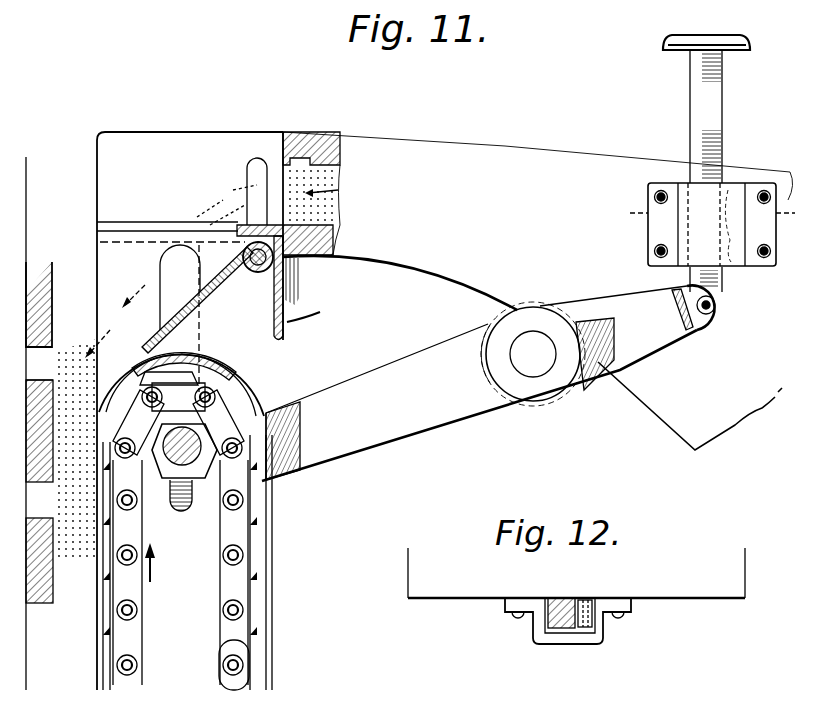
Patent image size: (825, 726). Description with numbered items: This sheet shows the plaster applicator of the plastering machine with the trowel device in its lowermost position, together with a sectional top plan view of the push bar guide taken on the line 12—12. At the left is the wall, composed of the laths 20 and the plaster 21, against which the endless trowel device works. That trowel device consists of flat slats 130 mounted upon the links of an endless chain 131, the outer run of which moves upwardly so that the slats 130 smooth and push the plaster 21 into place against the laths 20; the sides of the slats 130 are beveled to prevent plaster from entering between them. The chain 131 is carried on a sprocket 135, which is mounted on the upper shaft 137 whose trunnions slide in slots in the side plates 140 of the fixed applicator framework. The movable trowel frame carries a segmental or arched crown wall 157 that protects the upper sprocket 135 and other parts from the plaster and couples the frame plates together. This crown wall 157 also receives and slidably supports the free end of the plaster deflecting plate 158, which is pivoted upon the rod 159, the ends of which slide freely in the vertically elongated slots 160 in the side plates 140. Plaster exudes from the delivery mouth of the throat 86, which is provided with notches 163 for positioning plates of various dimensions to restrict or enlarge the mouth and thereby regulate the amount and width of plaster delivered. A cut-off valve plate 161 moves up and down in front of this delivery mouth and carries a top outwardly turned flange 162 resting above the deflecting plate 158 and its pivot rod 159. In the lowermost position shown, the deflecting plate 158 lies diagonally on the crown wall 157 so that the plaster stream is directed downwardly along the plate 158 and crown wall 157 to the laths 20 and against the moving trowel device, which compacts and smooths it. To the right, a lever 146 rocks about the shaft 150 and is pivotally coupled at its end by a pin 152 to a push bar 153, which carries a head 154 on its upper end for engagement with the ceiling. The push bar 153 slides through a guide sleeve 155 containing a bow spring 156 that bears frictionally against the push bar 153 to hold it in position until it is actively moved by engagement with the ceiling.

In FIG. 11, the side plates 140 is at (133, 140).
In FIG. 11, the vertically elongated slots 160 is at (257, 165).
In FIG. 11, the notches 163 is at (303, 150).
In FIG. 11, the throat 86 is at (420, 150).
In FIG. 12, the throat 86 is at (418, 601).
In FIG. 11, the head 154 is at (668, 52).
In FIG. 11, the push bar 153 is at (690, 102).
In FIG. 12, the push bar 153 is at (548, 630).
In FIG. 11, the section line 12— 12 is at (713, 215).
In FIG. 11, the guide sleeve 155 is at (680, 228).
In FIG. 12, the guide sleeve 155 is at (600, 645).
In FIG. 11, the top outwardly turned flange 162 is at (238, 225).
In FIG. 11, the rod 159 is at (252, 273).
In FIG. 11, the plaster deflecting plate 158 is at (212, 300).
In FIG. 11, the cut-off valve plate 161 is at (286, 306).
In FIG. 11, the segmental or arched crown wall 157 is at (229, 372).
In FIG. 11, the laths 20 is at (53, 300).
In FIG. 11, the plaster 21 is at (66, 368).
In FIG. 11, the shaft 150 is at (523, 372).
In FIG. 11, the lever 146 is at (425, 432).
In FIG. 11, the pin 152 is at (717, 318).
In FIG. 11, the upper shaft 137 is at (178, 468).
In FIG. 11, the sprocket 135 is at (205, 490).
In FIG. 11, the flat slats 130 is at (262, 574).
In FIG. 11, the endless chain 131 is at (229, 645).
In FIG. 12, the bow spring 156 is at (593, 620).